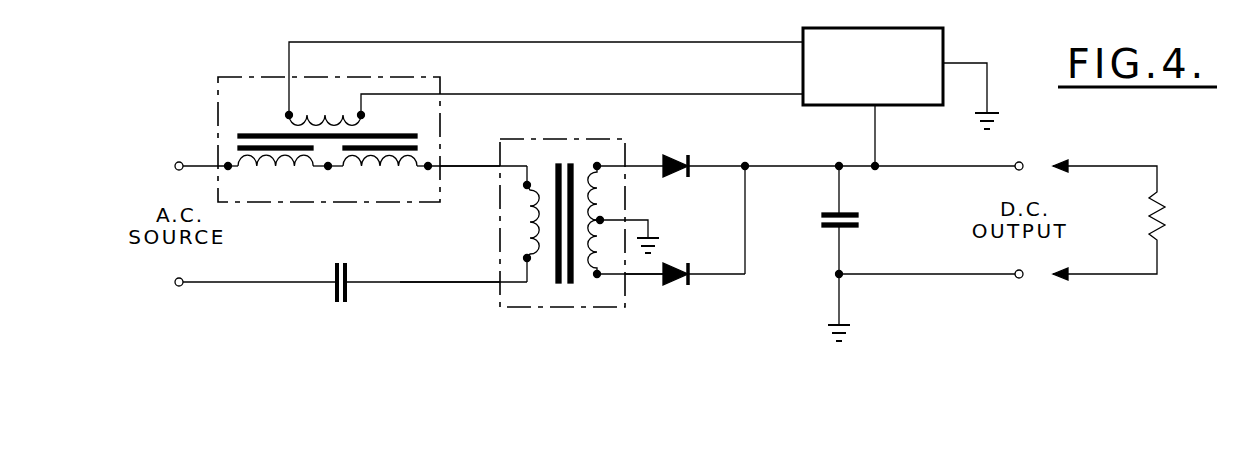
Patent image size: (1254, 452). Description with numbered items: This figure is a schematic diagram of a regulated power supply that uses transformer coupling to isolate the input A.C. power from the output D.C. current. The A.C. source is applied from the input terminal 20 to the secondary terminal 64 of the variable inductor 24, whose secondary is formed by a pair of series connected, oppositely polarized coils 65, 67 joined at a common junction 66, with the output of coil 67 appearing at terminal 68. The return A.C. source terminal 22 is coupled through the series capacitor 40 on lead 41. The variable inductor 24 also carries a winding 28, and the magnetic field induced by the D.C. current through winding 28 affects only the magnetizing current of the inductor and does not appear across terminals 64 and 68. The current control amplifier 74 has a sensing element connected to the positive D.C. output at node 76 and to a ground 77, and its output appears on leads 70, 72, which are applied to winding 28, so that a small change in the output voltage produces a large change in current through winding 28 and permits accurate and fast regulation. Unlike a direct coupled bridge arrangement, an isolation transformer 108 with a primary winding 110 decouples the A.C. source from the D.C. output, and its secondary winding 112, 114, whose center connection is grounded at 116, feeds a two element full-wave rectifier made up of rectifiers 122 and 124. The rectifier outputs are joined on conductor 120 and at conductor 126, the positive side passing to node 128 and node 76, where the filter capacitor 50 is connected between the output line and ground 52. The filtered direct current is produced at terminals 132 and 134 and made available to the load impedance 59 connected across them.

The input terminal 20 is at (175, 165).
The return A.C. source terminal 22 is at (178, 287).
The variable inductor 24 is at (244, 77).
The winding 28 is at (287, 120).
The series capacitor 40 is at (334, 286).
The lead 41 is at (427, 283).
The filter capacitor 50 is at (821, 215).
The ground connection 52 is at (842, 277).
The load impedance 59 is at (1166, 219).
The secondary terminal 64 is at (226, 164).
The coil 65 is at (283, 168).
The common junction 66 is at (328, 168).
The coil 67 is at (400, 168).
The terminal 68 is at (468, 166).
The lead 70 is at (545, 94).
The lead 72 is at (392, 42).
The current control amplifier 74 is at (944, 40).
The node 76 is at (877, 165).
The ground 77 is at (988, 90).
The isolation transformer 108 is at (558, 139).
The primary winding 110 is at (532, 224).
The secondary winding 112 is at (603, 194).
The secondary winding 114 is at (584, 276).
The center tap ground 116 is at (652, 230).
The conductor 120 is at (652, 276).
The rectifier 122 is at (676, 157).
The rectifier 124 is at (692, 280).
The conductor 126 is at (745, 164).
The junction 128 is at (839, 164).
The terminal 132 is at (1021, 161).
The terminal 134 is at (1019, 279).